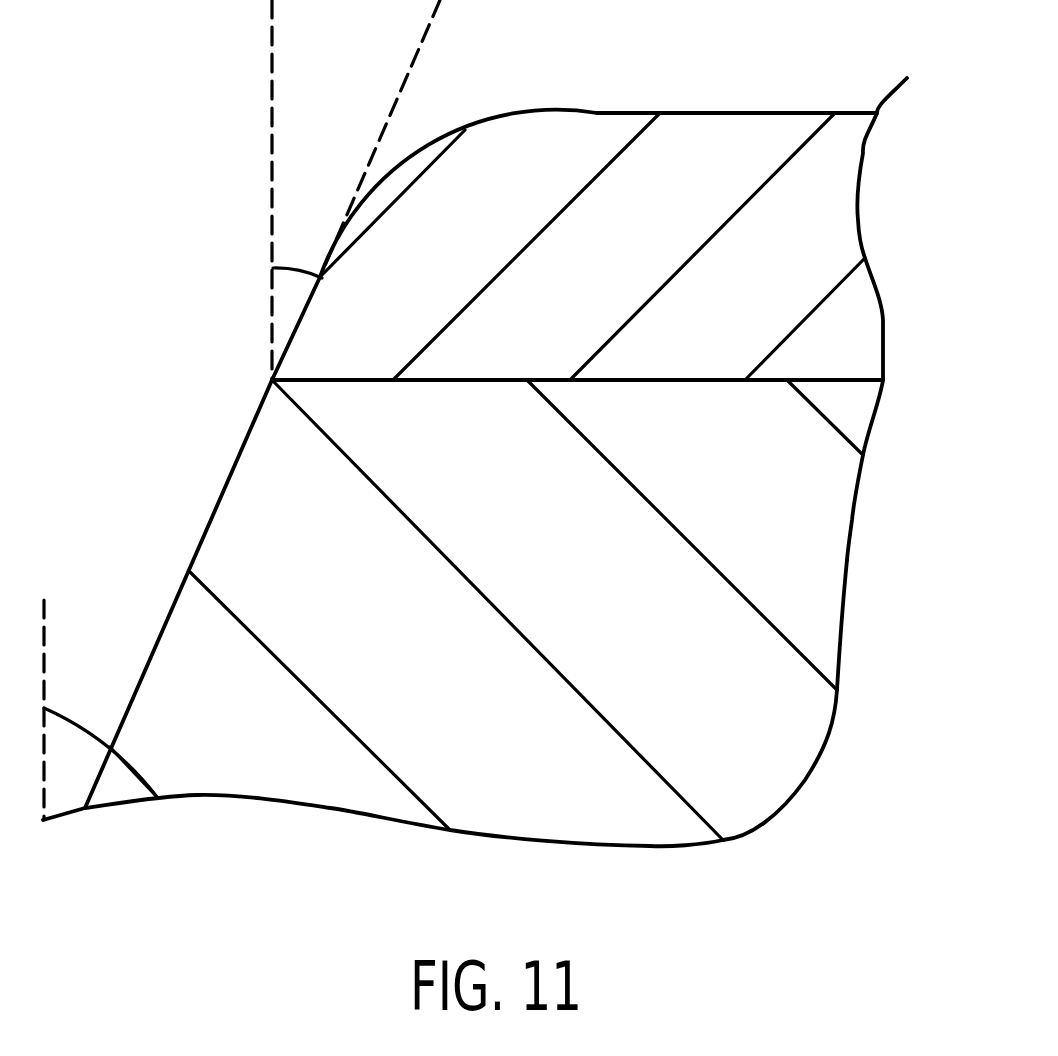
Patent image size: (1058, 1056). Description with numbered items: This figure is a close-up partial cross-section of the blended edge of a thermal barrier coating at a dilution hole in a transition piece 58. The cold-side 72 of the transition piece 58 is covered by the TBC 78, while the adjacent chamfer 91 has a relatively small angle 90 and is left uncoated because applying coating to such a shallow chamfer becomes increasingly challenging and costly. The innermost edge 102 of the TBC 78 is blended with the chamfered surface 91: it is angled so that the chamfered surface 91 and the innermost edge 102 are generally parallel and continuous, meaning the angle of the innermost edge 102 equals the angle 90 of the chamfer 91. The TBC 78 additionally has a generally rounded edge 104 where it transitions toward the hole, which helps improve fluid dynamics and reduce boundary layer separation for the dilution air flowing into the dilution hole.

The transition piece 58 is at (810, 533).
The cold-side 72 is at (850, 372).
The TBC 78 is at (748, 113).
The angle 90 is at (297, 272).
The chamfer 91 is at (214, 497).
The innermost edge 102 is at (295, 311).
The rounded edge 104 is at (455, 127).